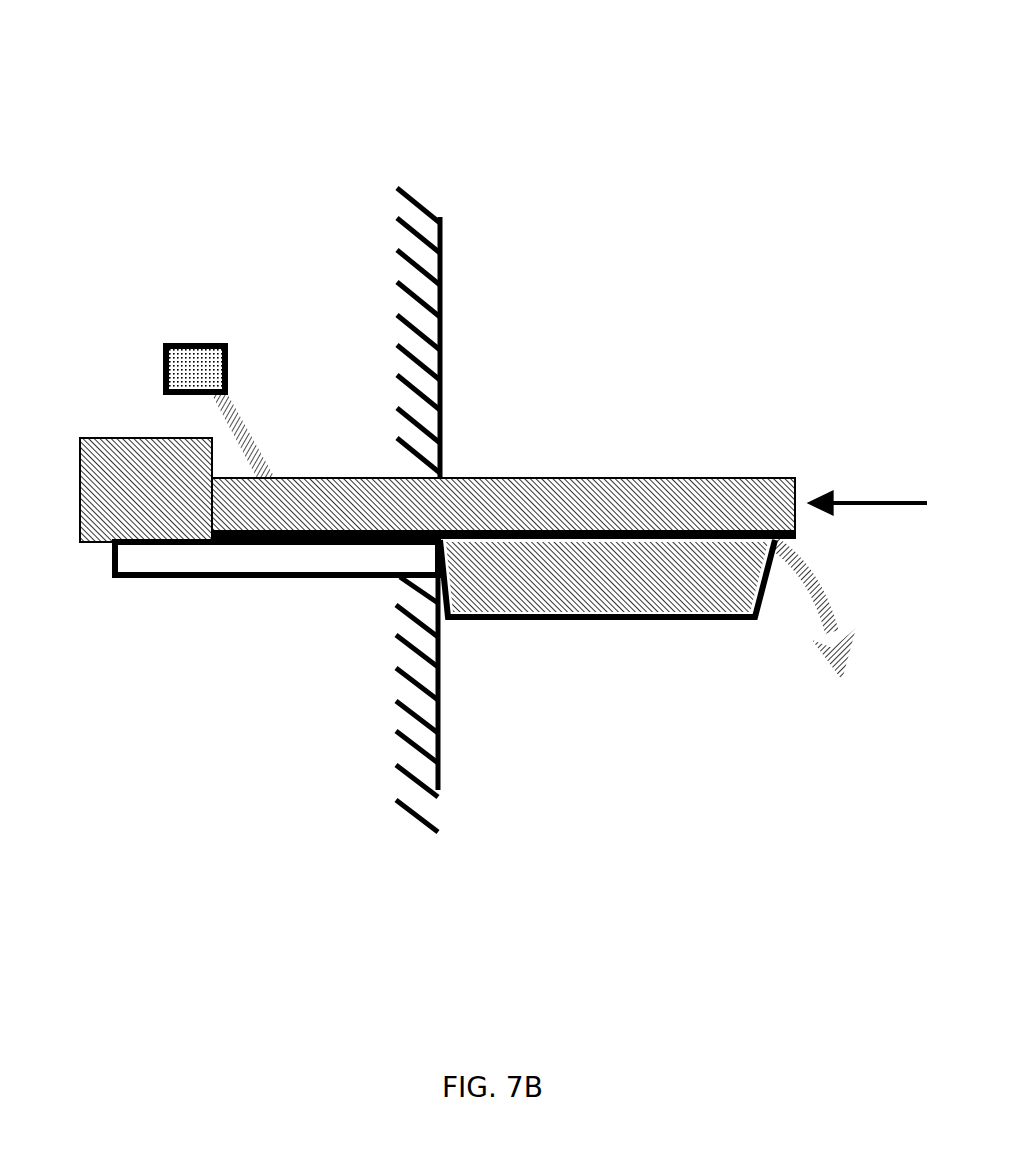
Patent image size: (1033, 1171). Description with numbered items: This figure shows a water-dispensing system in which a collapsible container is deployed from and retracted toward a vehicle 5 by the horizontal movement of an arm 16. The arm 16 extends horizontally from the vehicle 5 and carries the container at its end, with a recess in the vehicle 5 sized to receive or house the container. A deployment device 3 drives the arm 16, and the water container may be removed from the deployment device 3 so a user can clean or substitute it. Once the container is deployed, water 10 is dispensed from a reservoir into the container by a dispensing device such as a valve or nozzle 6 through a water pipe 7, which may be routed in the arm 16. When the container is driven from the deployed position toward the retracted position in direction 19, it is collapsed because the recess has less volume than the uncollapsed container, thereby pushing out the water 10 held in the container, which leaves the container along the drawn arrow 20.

The vehicle 5 is at (445, 298).
The nozzle 6 is at (183, 343).
The water pipe 7 is at (240, 432).
The deployment device 3 is at (97, 475).
The arm 16 is at (645, 497).
The water 10 is at (590, 578).
The direction 19 is at (863, 497).
The discharge direction arrow 20 is at (812, 592).